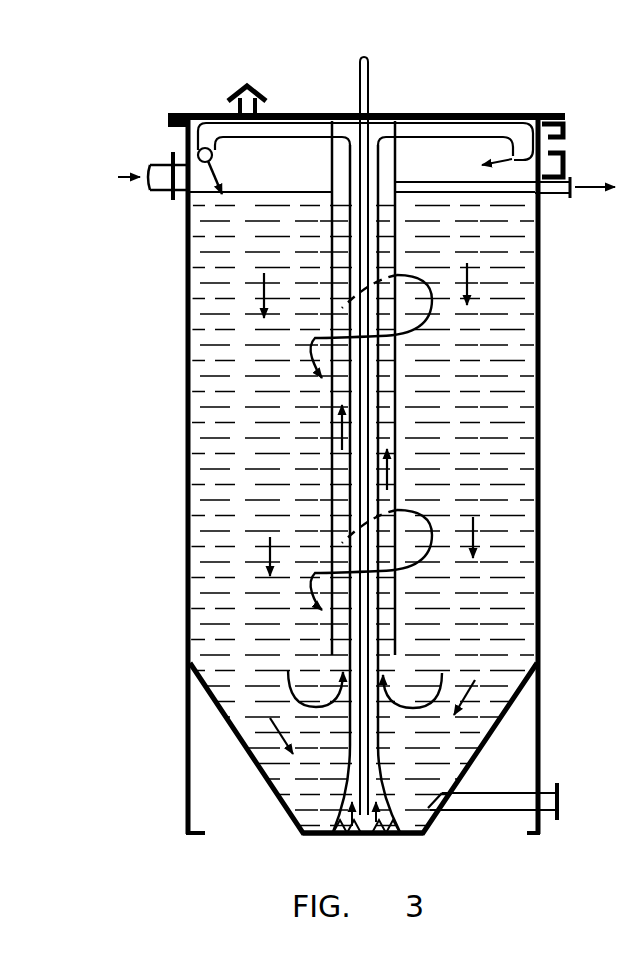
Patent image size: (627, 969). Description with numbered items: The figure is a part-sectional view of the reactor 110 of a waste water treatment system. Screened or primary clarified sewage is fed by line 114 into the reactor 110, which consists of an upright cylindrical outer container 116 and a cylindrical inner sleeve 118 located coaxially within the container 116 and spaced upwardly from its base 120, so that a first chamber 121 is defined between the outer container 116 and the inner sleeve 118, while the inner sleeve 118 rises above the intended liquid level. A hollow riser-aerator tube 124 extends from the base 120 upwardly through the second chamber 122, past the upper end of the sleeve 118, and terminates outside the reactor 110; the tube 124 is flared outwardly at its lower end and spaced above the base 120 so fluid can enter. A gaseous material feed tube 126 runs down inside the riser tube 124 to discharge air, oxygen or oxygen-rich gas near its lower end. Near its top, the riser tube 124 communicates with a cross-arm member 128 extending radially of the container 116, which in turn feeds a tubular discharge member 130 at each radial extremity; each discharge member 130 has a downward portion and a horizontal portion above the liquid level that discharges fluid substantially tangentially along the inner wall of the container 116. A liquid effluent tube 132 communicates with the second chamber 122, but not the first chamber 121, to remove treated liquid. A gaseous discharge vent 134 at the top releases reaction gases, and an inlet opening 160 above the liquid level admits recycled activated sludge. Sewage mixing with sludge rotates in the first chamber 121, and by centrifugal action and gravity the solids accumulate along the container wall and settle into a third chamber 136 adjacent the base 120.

The reactor 110 is at (560, 50).
The line 114 is at (118, 170).
The outer container 116 is at (540, 422).
The inner sleeve 118 is at (398, 476).
The base 120 is at (405, 836).
The first chamber 121 is at (220, 468).
The second chamber 122 is at (343, 482).
The riser-aerator tube 124 is at (392, 405).
The gaseous material feed tube 126 is at (370, 78).
The cross-arm member 128 is at (430, 128).
The tubular discharge member 130 is at (215, 153).
The liquid effluent tube 132 is at (460, 182).
The gaseous discharge vent 134 is at (236, 108).
The third chamber 136 is at (305, 778).
The inlet opening 160 is at (563, 140).